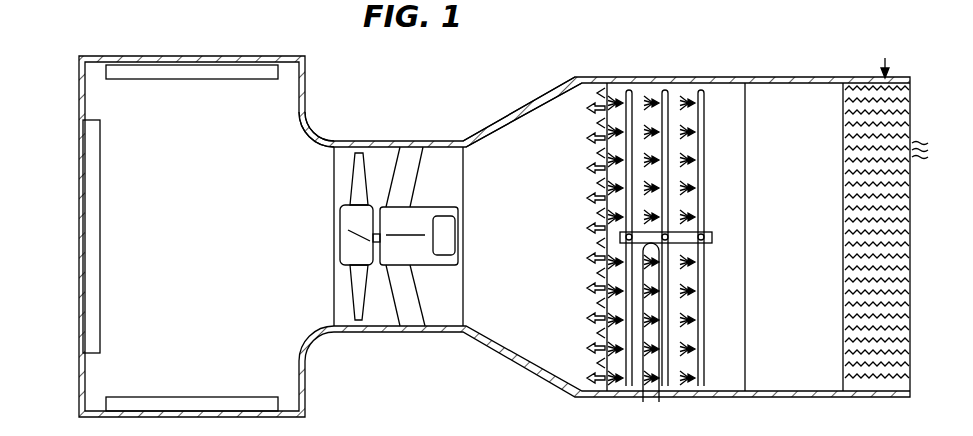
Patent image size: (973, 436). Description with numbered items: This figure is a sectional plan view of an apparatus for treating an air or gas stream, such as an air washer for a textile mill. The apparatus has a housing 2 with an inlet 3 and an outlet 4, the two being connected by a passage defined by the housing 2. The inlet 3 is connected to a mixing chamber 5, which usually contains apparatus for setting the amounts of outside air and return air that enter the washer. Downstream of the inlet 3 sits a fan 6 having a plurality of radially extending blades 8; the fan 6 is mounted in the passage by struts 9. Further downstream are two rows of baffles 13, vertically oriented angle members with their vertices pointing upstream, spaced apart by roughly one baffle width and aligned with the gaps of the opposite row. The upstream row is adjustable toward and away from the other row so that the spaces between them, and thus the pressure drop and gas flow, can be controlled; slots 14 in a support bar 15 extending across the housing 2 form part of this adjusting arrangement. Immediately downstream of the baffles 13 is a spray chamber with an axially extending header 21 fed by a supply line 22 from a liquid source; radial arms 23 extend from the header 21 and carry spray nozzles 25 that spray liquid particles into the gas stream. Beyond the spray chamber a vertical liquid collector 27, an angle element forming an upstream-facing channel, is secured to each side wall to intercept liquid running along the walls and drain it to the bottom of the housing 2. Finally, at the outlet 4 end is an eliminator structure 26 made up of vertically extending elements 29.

The housing 2 is at (512, 116).
The inlet 3 is at (325, 158).
The outlet 4 is at (912, 113).
The mixing chamber 5 is at (194, 162).
The fan 6 is at (352, 225).
The blades 8 is at (358, 292).
The struts 9 is at (405, 166).
The baffles 13 is at (597, 130).
The slots 14 is at (597, 214).
The support bar 15 is at (585, 312).
The header 21 is at (698, 236).
The supply line 22 is at (645, 400).
The radial arms 23 is at (705, 150).
The spray nozzles 25 is at (702, 320).
The eliminator structure 26 is at (887, 55).
The vertical liquid collector 27 is at (838, 87).
The elements 29 is at (936, 152).